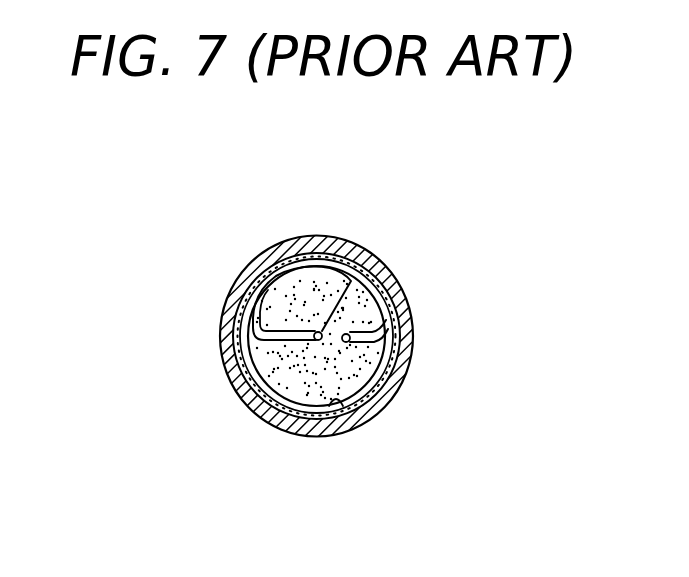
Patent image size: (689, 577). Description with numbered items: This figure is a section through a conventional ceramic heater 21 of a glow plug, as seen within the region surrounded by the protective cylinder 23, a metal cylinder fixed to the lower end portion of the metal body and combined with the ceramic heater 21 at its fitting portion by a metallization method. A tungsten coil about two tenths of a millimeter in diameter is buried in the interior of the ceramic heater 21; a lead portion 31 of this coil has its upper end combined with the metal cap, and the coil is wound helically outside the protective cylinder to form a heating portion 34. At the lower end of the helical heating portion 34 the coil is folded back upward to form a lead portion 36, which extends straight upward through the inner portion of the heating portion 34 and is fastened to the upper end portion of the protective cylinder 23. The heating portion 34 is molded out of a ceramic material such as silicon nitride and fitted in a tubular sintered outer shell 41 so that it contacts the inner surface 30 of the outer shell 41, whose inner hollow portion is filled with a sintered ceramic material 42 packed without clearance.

The ceramic heater 21 is at (268, 242).
The protective cylinder 23 is at (247, 273).
The outer shell 41 is at (242, 343).
The heating portion 34 is at (265, 385).
The filler material 42 is at (303, 385).
The inner surface 30 is at (330, 385).
The lead portion 31 is at (351, 281).
The lead portion 36 is at (348, 342).